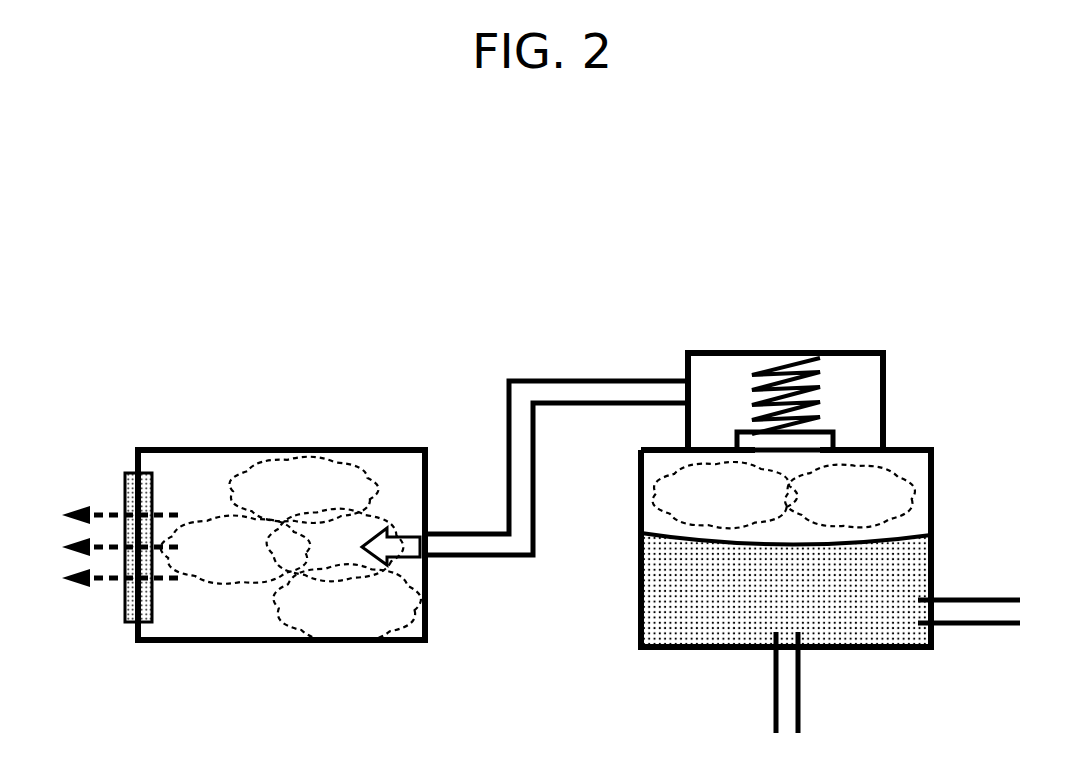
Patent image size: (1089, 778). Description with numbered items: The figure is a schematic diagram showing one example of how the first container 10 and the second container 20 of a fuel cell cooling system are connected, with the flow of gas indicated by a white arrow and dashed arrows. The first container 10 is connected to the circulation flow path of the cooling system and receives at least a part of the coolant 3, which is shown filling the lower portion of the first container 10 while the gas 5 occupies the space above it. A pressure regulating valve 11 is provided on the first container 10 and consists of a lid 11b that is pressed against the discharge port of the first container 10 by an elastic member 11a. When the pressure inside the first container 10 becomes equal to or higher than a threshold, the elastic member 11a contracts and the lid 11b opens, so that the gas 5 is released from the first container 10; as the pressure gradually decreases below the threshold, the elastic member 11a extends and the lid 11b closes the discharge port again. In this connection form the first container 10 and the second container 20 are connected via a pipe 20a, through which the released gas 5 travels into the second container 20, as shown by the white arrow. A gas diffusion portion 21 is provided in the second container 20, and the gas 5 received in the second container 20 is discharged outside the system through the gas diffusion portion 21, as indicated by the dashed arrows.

The coolant 3 is at (678, 595).
The gas 5 is at (313, 480).
The first container 10 is at (952, 535).
The pressure regulating valve 11 is at (967, 330).
The elastic member 11a is at (830, 388).
The lid 11b is at (838, 438).
The second container 20 is at (200, 443).
The pipe 20a is at (500, 400).
The gas diffusion portion 21 is at (120, 478).